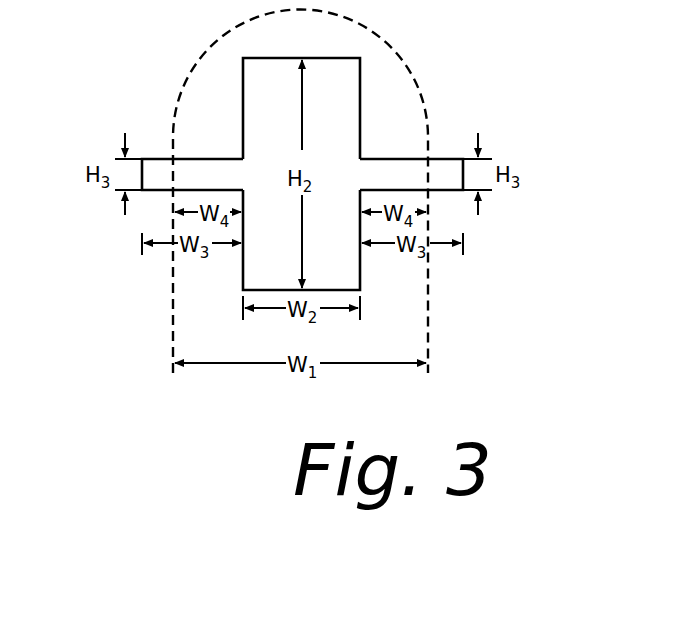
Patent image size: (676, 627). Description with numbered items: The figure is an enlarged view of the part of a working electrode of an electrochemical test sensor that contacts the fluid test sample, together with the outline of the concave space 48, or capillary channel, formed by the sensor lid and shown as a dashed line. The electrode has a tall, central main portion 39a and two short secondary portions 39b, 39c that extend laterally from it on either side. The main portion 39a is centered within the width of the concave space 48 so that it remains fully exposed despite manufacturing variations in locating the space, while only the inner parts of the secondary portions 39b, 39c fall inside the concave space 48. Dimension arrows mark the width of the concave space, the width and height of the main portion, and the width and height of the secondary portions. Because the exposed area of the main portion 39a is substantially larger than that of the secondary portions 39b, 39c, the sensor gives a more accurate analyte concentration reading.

The main portion 39a is at (253, 68).
The secondary portion 39b is at (190, 167).
The secondary portion 39c is at (407, 170).
The concave space 48 is at (395, 56).